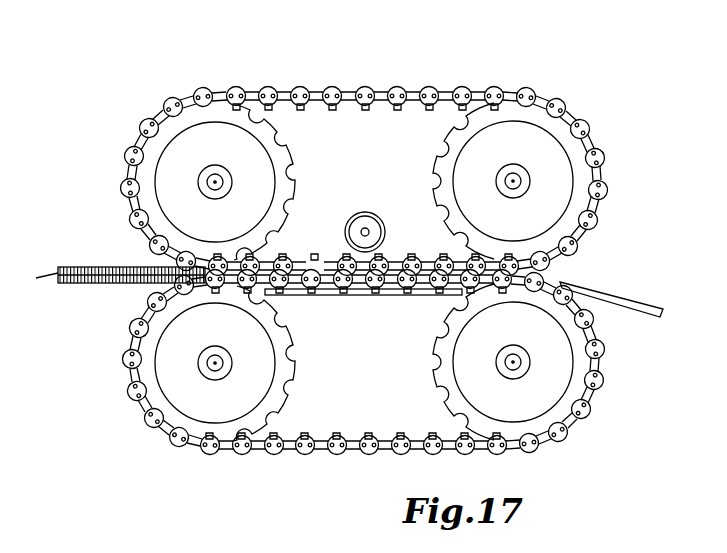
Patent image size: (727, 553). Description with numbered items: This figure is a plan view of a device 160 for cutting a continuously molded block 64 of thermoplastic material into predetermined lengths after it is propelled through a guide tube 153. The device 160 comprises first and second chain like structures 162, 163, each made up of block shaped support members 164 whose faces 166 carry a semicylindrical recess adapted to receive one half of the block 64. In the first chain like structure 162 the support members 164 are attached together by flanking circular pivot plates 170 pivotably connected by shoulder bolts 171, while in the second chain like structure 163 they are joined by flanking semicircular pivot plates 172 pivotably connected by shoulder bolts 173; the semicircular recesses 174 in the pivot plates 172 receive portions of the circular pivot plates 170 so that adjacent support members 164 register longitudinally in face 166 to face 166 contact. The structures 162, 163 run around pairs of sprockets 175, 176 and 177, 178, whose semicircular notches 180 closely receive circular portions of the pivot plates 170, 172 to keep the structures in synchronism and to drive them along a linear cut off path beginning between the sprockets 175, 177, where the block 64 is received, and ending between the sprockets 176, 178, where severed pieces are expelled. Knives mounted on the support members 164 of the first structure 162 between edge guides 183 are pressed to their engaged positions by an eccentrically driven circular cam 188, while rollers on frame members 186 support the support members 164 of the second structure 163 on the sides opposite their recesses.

The device 160 is at (262, 70).
The first chain like structure 162 is at (450, 86).
The second chain like structure 163 is at (348, 457).
The support members 164 is at (347, 91).
The face 166 is at (311, 91).
The circular pivot plates 170 is at (228, 90).
The shoulder bolts 171 is at (413, 91).
The semicircular pivot plates 172 is at (143, 396).
The shoulder bolts 173 is at (385, 438).
The semicircular recesses 174 is at (172, 452).
The sprocket 175 is at (147, 161).
The sprocket 176 is at (565, 152).
The sprocket 177 is at (140, 356).
The sprocket 178 is at (568, 398).
The semicircular notches 180 is at (296, 178).
The edge guides 183 is at (340, 106).
The frame members 186 is at (432, 296).
The circular cam 188 is at (350, 233).
The guide tube 153 is at (74, 267).
The block 64 is at (29, 281).